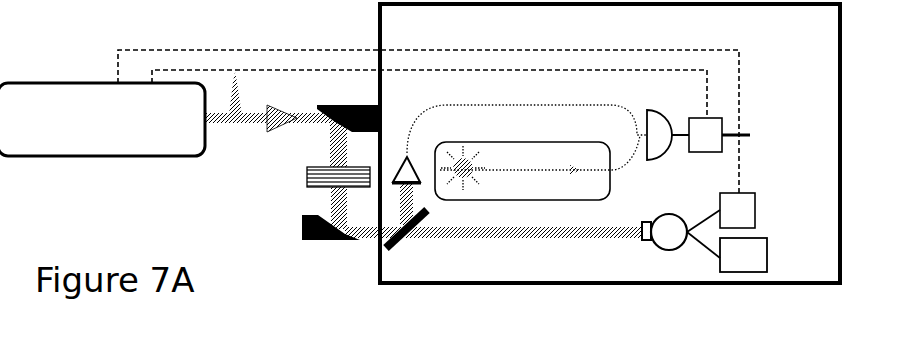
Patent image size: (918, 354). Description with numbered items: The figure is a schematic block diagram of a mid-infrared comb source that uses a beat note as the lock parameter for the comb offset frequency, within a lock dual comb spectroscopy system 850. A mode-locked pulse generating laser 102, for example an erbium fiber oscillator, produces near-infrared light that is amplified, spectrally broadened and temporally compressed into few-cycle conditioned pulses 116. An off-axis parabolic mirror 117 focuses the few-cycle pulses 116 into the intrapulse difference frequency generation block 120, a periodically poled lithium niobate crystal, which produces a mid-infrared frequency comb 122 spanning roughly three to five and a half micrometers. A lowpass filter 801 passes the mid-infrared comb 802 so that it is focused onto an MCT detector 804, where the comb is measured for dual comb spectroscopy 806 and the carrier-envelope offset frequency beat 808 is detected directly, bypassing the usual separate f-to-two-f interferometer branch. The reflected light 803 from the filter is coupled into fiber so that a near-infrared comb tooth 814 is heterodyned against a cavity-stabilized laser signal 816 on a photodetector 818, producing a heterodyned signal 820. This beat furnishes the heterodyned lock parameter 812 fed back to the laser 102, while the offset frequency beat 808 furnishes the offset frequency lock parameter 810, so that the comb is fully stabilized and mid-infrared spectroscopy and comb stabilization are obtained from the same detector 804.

The pulse generating laser 102 is at (102, 135).
The few-cycle conditioned pulses 116 is at (276, 119).
The off-axis parabolic mirror 117 is at (305, 228).
The intrapulse difference frequency generation 120 is at (311, 180).
The mid-IR frequency comb 122 is at (370, 237).
The lowpass filter 801 is at (406, 227).
The comb 802 is at (512, 244).
The reflected light 803 is at (411, 185).
The MCT detector 804 is at (681, 242).
The DCS 806 is at (765, 255).
The offset frequency beat 808 is at (758, 211).
The offset frequency lock parameter 810 is at (258, 35).
The heterodyned lock parameter 812 is at (303, 68).
The comb tooth 814 is at (527, 118).
The stable laser signal 816 is at (541, 173).
The photodetector 818 is at (662, 122).
The heterodyned signal 820 is at (742, 135).
The lock dual comb spectroscopy system 850 is at (822, 50).